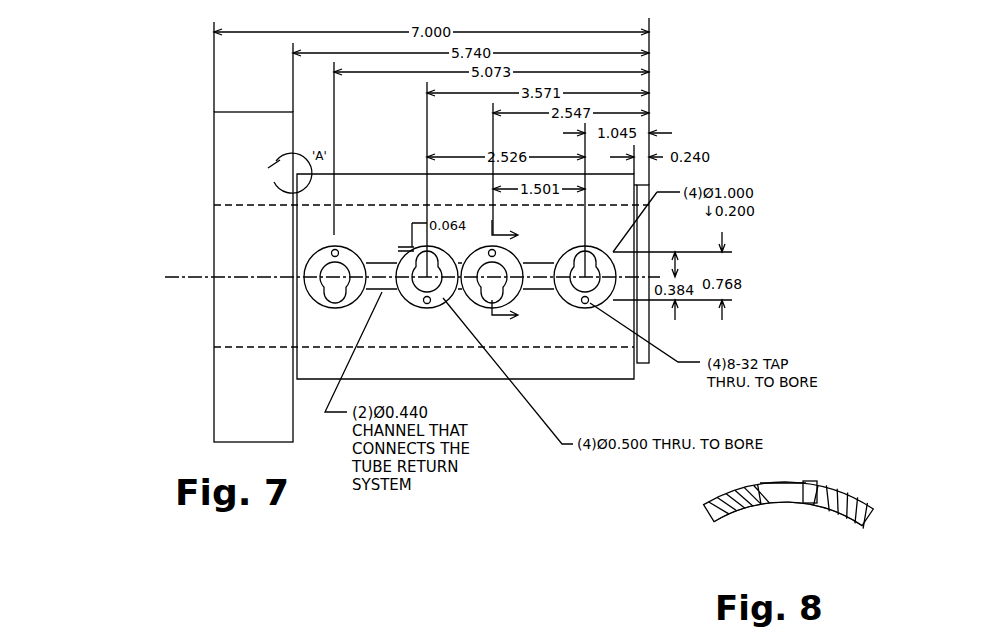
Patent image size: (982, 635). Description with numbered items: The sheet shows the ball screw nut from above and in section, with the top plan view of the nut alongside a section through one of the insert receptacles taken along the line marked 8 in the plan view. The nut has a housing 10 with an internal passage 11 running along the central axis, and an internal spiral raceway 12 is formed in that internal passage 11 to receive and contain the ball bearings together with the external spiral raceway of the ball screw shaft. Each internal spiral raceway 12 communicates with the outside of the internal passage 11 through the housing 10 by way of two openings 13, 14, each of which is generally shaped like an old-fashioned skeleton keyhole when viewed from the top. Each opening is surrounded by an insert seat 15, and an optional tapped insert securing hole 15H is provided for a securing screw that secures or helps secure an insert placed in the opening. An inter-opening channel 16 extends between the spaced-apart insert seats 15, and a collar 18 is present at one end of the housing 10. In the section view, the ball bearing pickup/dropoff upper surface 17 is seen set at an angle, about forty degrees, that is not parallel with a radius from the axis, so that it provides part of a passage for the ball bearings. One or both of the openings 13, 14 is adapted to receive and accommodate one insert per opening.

In FIG. 7, the external spiral raceway 8 is at (511, 279).
In FIG. 7, the housing 10 is at (437, 381).
In FIG. 8, the housing 10 is at (867, 508).
In FIG. 7, the internal passage 11 is at (408, 214).
In FIG. 7, the internal spiral raceway 12 is at (252, 209).
In FIG. 8, the internal spiral raceway 12 is at (840, 530).
In FIG. 7, the opening 13 is at (500, 282).
In FIG. 8, the opening 13 is at (785, 500).
In FIG. 7, the opening 14 is at (580, 282).
In FIG. 7, the insert seat 15 is at (372, 228).
In FIG. 8, the insert seat 15 is at (813, 486).
In FIG. 7, the tapped insert securing hole 15H is at (435, 303).
In FIG. 7, the inter-opening channel 16 is at (375, 284).
In FIG. 8, the inter-opening channel 16 is at (812, 494).
In FIG. 8, the ball bearing pickup/dropoff upper surface 17 is at (767, 513).
In FIG. 7, the collar 18 is at (214, 132).